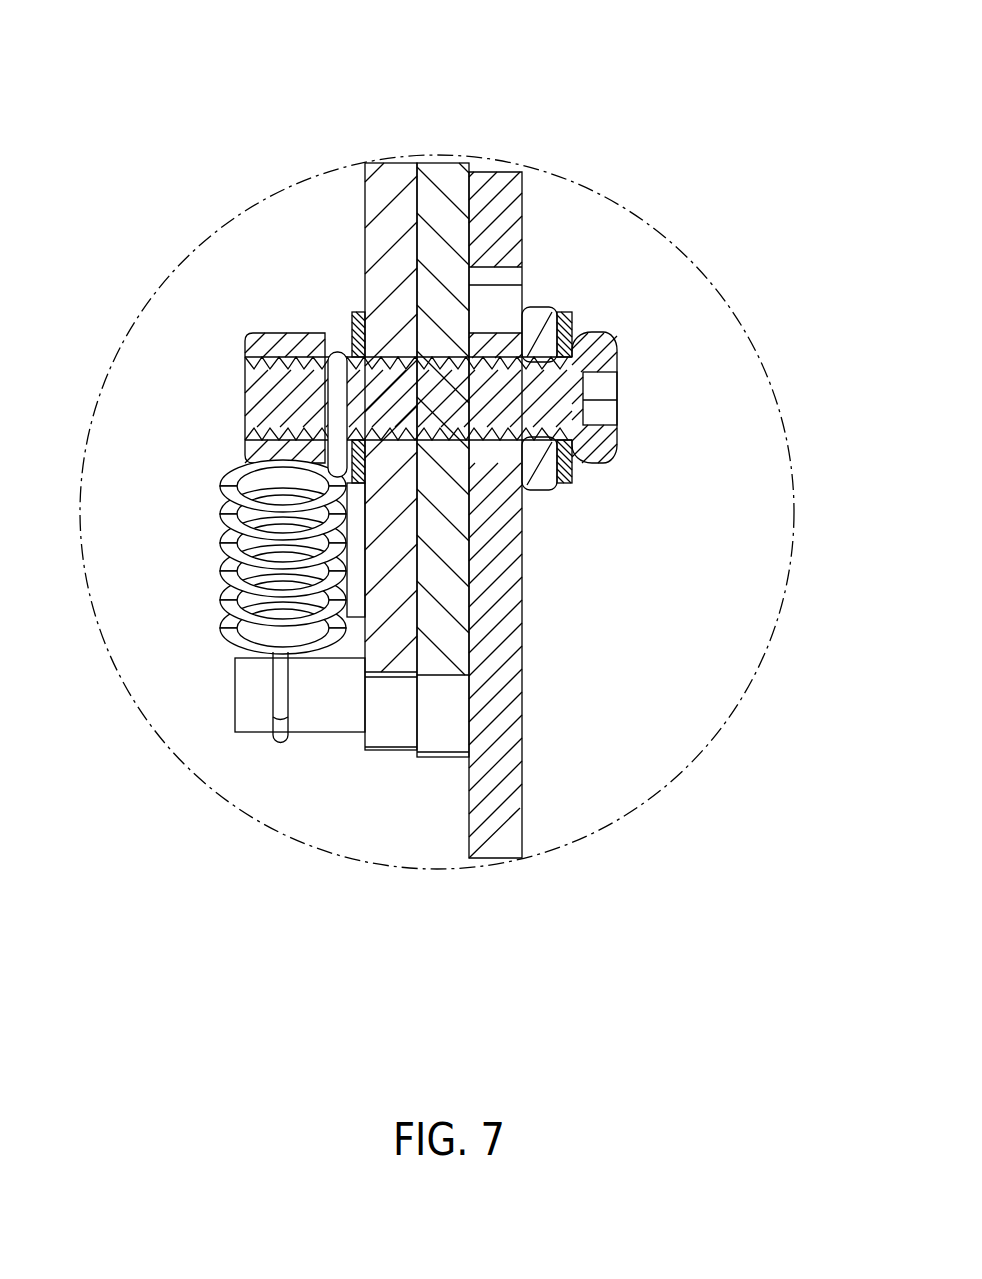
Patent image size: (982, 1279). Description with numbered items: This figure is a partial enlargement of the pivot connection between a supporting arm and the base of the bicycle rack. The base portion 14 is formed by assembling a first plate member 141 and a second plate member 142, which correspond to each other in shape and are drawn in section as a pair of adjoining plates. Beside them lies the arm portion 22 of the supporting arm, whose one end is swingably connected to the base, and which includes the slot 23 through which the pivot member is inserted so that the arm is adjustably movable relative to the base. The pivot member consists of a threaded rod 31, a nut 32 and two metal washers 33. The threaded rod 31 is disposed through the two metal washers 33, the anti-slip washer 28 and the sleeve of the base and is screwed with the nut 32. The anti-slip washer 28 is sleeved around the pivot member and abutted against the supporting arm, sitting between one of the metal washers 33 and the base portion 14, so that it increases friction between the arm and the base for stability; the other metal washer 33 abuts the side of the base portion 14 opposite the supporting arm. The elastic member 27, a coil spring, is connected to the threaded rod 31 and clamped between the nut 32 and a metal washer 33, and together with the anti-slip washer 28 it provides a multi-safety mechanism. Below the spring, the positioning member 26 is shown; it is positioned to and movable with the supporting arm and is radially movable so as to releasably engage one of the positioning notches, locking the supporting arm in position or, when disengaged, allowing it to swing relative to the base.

The base portion 14 is at (382, 37).
The first plate member 141 is at (427, 178).
The second plate member 142 is at (383, 168).
The arm portion 22 is at (514, 688).
The slot 23 is at (497, 307).
The positioning member 26 is at (263, 717).
The elastic member 27 is at (228, 633).
The anti-slip washer 28 is at (542, 307).
The threaded rod 31 is at (596, 338).
The nut 32 is at (250, 347).
The metal washers 33 is at (356, 320).